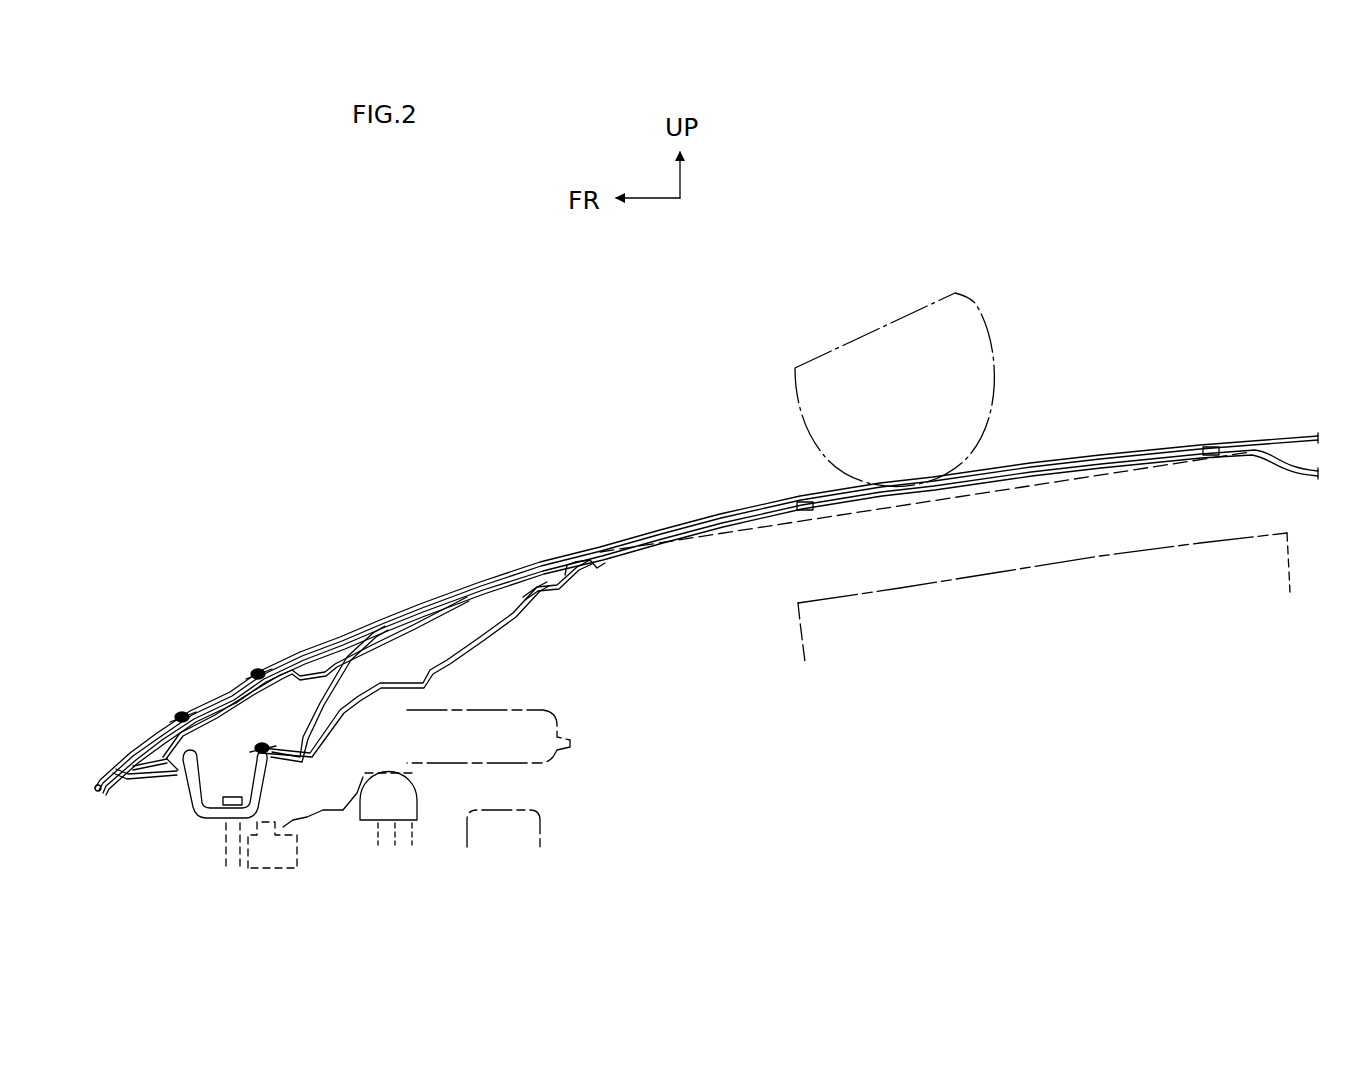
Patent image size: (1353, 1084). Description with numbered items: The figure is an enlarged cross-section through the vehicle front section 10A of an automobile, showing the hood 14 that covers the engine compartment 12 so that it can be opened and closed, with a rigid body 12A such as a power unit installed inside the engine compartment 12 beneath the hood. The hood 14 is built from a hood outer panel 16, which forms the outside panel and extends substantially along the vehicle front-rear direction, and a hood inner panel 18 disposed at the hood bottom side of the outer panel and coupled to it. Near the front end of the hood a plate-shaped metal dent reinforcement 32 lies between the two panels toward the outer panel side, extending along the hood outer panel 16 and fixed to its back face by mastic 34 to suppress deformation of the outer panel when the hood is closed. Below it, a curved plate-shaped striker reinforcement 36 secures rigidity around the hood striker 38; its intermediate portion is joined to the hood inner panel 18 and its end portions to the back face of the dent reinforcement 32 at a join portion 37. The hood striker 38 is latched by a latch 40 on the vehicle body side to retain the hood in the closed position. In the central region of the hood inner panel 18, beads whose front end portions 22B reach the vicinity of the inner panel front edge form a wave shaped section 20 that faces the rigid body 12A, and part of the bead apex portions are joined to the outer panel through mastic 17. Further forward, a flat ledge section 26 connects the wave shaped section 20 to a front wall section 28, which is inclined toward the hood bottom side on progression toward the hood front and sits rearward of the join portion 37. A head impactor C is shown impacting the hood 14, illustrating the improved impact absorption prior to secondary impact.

The vehicle front section 10A is at (1200, 190).
The engine compartment 12 is at (714, 708).
The rigid body 12A is at (1157, 534).
The hood 14 is at (706, 583).
The hood outer panel 16 is at (720, 518).
The mastic 17 is at (803, 504).
The hood inner panel 18 is at (722, 534).
The wave shaped section 20 is at (1034, 470).
The front end portion of bead 22B is at (565, 563).
The ledge section 26 is at (543, 580).
The front wall section 28 is at (495, 620).
The dent reinforcement 32 is at (343, 640).
The mastic 34 is at (258, 667).
The striker reinforcement 36 is at (367, 660).
The rear end side join portion 37 is at (398, 639).
The hood striker 38 is at (178, 806).
The latch 40 is at (220, 833).
The head impactor C is at (980, 308).